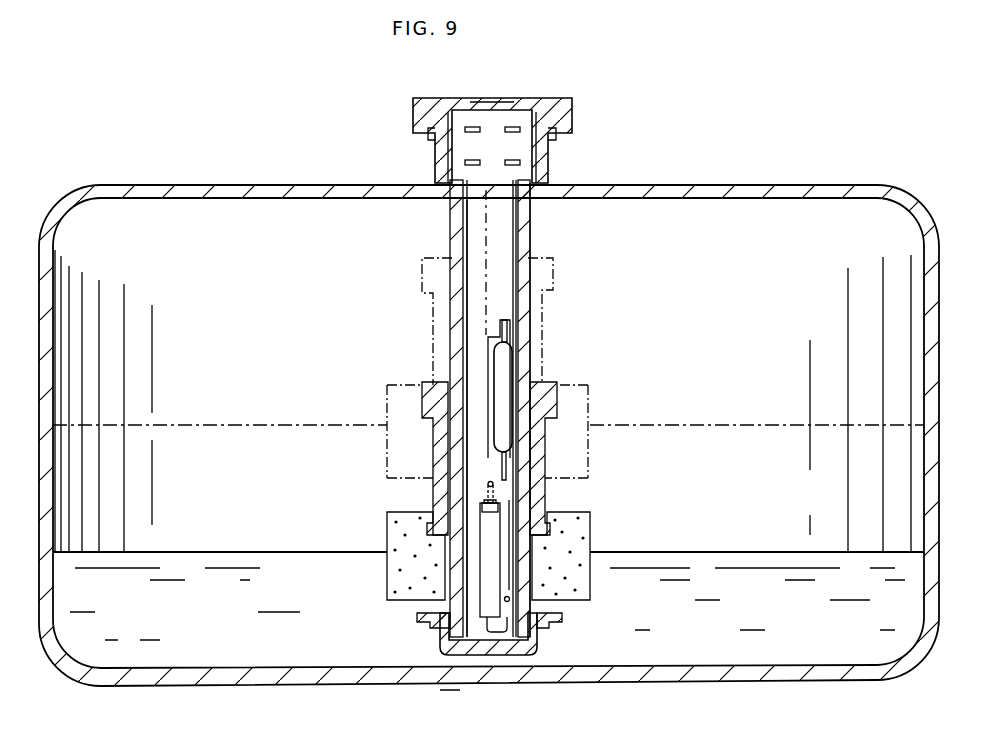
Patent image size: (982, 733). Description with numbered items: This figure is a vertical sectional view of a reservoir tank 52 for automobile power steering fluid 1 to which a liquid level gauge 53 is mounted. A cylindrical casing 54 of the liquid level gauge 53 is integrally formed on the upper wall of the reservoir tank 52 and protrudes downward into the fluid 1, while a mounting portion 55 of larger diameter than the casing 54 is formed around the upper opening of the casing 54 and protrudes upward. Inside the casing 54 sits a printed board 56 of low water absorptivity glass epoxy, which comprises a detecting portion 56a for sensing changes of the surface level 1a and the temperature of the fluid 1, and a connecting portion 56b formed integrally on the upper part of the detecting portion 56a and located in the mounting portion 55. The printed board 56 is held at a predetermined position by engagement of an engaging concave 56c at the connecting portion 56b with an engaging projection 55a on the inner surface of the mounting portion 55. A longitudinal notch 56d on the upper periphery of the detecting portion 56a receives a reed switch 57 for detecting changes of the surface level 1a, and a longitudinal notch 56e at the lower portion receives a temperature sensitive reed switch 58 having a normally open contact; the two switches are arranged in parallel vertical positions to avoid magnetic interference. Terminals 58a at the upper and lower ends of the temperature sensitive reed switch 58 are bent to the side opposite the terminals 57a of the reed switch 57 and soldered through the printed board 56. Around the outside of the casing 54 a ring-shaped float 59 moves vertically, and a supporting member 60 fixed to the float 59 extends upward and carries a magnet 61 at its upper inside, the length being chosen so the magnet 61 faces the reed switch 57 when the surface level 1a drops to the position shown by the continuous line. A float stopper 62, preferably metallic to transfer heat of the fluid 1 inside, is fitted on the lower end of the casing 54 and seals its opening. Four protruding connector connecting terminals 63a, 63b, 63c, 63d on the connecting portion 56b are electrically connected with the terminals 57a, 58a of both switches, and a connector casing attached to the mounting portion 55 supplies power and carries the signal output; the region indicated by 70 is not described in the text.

The fluid 1 is at (167, 558).
The surface level 1a is at (218, 423).
The reservoir tank 52 is at (935, 263).
The liquid level gauge 53 is at (485, 482).
The cylindrical casing 54 is at (532, 213).
The mounting portion 55 is at (442, 141).
The engaging projection 55a is at (548, 128).
The printed board 56 is at (462, 212).
The detecting portion 56a is at (470, 331).
The connecting portion 56b is at (490, 104).
The engaging concave 56c is at (420, 119).
The longitudinal notch 56d is at (500, 334).
The longitudinal notch 56e is at (478, 504).
The reed switch 57 is at (507, 362).
The terminals 57a is at (513, 327).
The temperature sensitive reed switch 58 is at (495, 527).
The terminals 58a is at (488, 484).
The float 59 is at (387, 392).
The supporting member 60 is at (540, 436).
The magnet 61 is at (442, 380).
The float stopper 62 is at (440, 630).
The connector connecting terminal 63a is at (468, 127).
The connector connecting terminal 63b is at (514, 124).
The connector connecting terminal 63c is at (464, 165).
The connector connecting terminal 63d is at (522, 163).
The float region 70 is at (420, 265).